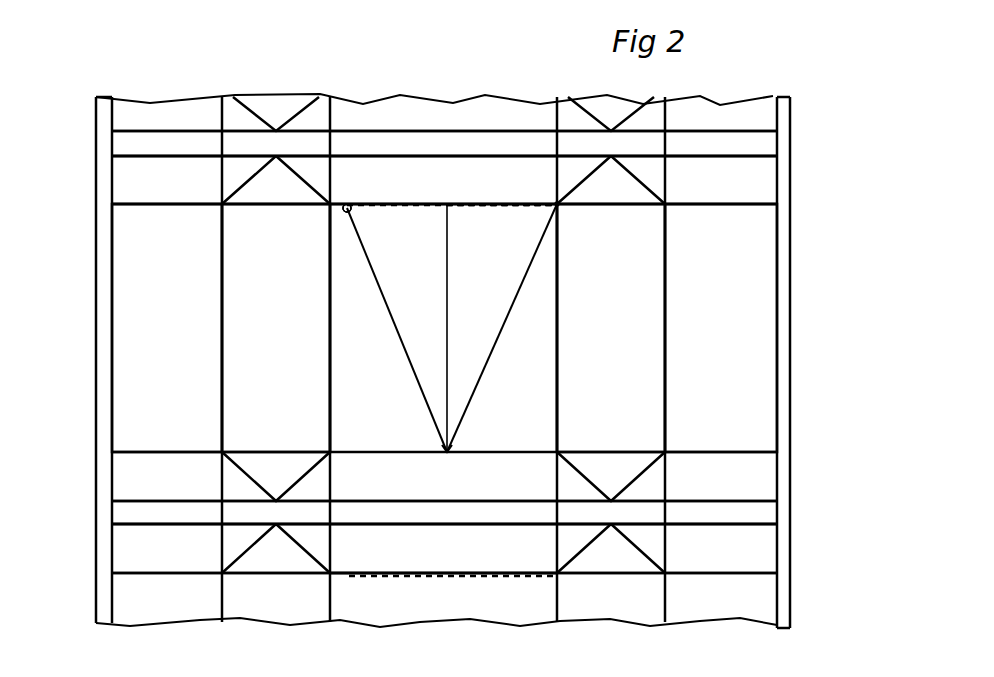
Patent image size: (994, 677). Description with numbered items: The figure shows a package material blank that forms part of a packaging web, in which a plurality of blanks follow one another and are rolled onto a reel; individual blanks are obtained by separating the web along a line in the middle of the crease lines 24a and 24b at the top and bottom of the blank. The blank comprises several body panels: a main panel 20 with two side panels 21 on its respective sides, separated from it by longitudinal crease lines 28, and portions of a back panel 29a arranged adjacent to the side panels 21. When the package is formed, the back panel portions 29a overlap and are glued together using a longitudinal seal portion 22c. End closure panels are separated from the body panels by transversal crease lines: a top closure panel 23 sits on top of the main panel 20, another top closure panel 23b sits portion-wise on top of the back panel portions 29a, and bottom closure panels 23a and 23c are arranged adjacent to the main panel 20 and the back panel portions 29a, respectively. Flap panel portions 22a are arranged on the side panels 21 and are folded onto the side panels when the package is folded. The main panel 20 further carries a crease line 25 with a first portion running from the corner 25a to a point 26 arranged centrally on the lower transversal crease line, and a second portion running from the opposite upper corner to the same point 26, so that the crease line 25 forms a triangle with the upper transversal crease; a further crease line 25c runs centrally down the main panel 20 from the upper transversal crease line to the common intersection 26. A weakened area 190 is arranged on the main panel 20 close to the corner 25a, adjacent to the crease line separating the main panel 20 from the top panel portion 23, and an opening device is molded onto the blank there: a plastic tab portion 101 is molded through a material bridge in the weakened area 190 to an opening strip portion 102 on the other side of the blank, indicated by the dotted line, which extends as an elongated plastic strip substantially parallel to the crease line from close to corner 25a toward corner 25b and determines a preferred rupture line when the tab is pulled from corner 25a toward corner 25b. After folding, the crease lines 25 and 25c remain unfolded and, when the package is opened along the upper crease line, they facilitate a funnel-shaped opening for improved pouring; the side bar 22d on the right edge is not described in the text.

The main panel 20 is at (430, 440).
The side panels 21 is at (278, 414).
The flap panel portions 22a is at (262, 183).
The longitudinal seal portion 22c is at (97, 335).
The right side bar 22d is at (790, 332).
The top closure panel 23 is at (472, 194).
The bottom closure panel 23a is at (418, 562).
The top closure panel 23b is at (444, 180).
The bottom closure panel 23c is at (172, 562).
The crease line 24a is at (398, 145).
The crease line 24b is at (120, 515).
The crease line 25 is at (363, 262).
The corner 25a is at (328, 212).
The corner 25b is at (558, 206).
The crease line 25c is at (450, 262).
The point 26 is at (450, 448).
The crease lines 28 is at (335, 352).
The back panel portions 29a is at (158, 412).
The tab portion 101 is at (357, 189).
The opening strip portion 102 is at (506, 220).
The weakened area 190 is at (355, 202).